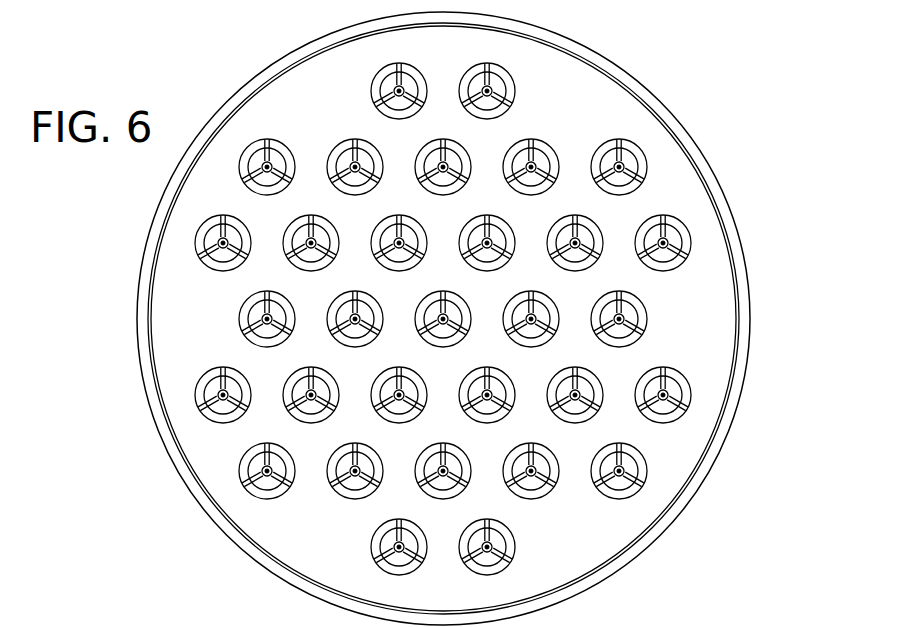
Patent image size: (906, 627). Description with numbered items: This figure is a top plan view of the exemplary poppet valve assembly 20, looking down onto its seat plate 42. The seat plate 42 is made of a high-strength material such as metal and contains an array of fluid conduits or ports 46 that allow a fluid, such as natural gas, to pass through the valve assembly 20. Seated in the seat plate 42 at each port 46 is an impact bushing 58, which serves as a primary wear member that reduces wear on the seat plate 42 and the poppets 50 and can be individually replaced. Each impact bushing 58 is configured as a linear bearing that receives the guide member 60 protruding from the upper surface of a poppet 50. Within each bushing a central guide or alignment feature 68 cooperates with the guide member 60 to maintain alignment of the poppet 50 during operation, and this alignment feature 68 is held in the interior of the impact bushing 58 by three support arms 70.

The valve assembly 20 is at (724, 91).
The seat plate 42 is at (590, 548).
The fluid conduits or ports 46 is at (241, 160).
The poppets 50 is at (264, 161).
The impact bushings 58 is at (665, 410).
The guide member 60 is at (666, 393).
The central guide or alignment feature 68 is at (258, 466).
The support arms 70 is at (266, 446).